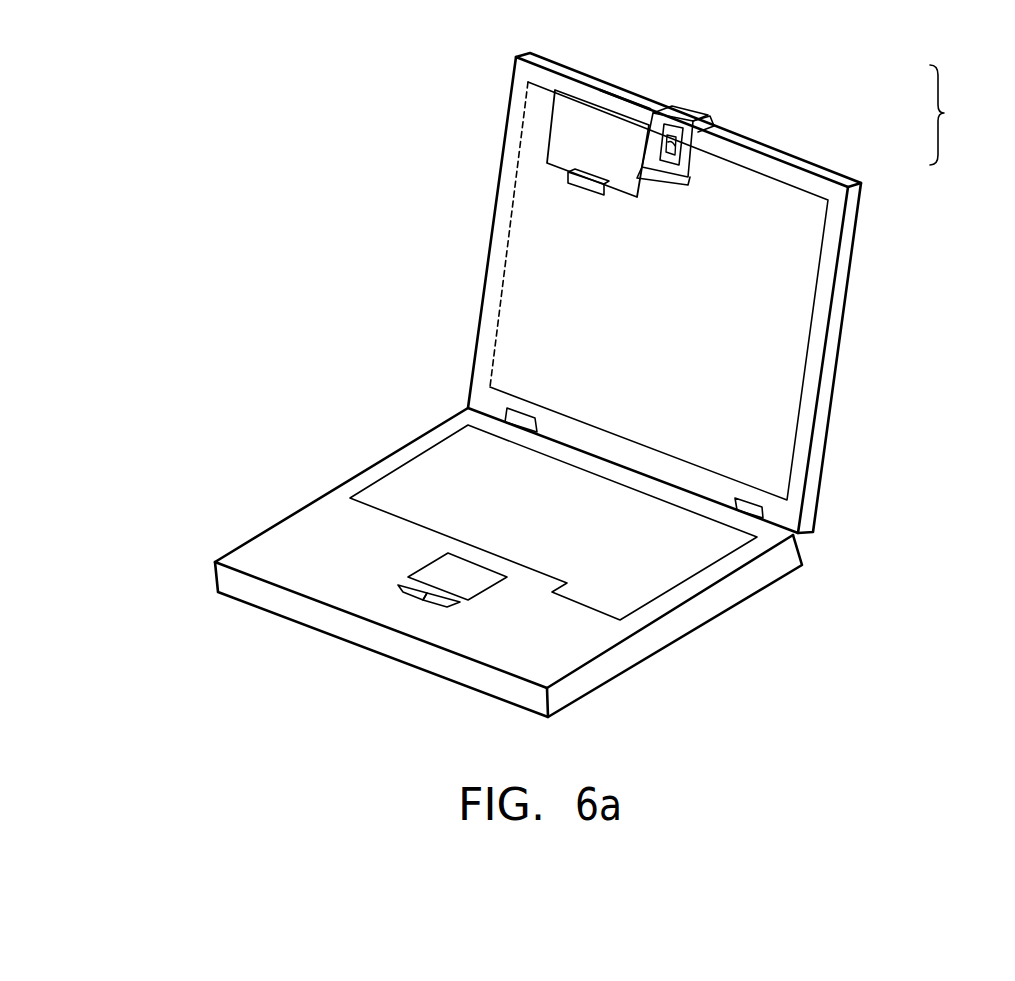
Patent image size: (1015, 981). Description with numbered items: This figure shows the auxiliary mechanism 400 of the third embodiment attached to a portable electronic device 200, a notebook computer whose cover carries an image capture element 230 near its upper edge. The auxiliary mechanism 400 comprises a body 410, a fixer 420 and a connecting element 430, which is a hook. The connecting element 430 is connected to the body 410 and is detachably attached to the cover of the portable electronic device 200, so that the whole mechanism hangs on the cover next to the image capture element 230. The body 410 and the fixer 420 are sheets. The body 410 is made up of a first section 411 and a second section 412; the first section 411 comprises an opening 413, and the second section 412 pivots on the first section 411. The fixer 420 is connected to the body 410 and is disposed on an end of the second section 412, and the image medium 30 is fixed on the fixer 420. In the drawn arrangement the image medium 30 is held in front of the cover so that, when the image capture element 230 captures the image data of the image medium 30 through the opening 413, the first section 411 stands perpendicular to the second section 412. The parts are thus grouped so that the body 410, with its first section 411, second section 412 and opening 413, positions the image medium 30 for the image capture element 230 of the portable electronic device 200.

The portable electronic device 200 is at (734, 608).
The image medium 30 is at (565, 131).
The fixer 420 is at (585, 183).
The auxiliary mechanism 400 is at (713, 122).
The body 410 is at (961, 115).
The first section 411 is at (700, 163).
The second section 412 is at (700, 186).
The opening 413 is at (703, 131).
The connecting element 430 is at (680, 108).
The image capture element 230 is at (657, 127).